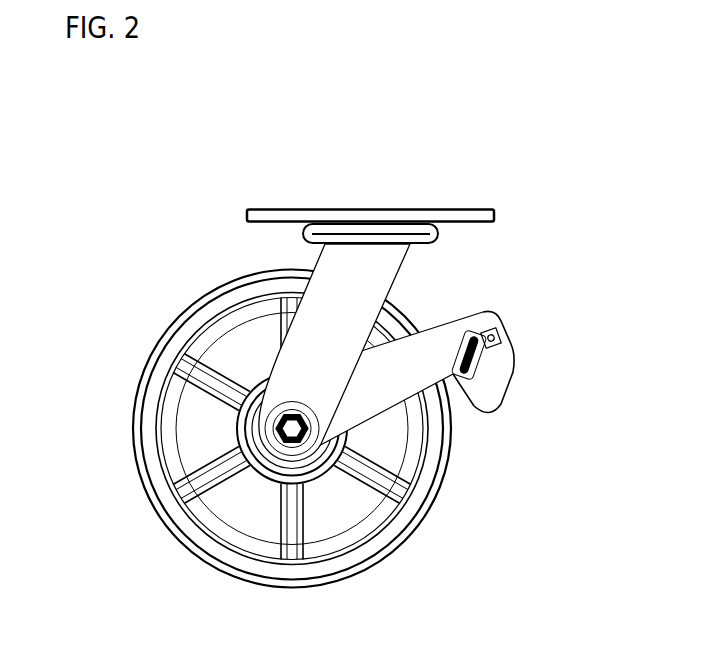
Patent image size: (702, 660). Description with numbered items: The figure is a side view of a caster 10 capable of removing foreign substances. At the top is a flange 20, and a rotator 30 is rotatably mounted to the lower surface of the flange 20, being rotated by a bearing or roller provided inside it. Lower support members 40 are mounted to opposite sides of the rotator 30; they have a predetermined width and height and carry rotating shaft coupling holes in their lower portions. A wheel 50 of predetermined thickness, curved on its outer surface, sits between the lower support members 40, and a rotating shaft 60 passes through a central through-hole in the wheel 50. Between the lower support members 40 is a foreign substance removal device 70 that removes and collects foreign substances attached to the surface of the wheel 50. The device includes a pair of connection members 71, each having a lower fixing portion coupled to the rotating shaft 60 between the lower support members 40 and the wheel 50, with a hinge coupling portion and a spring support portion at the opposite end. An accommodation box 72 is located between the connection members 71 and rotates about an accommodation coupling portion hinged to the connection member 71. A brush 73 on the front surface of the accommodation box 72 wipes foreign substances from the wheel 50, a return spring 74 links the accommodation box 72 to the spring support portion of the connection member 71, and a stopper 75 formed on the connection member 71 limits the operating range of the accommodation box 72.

The caster 10 is at (309, 132).
The flange 20 is at (470, 211).
The rotator 30 is at (438, 233).
The lower support member 40 is at (320, 256).
The wheel 50 is at (160, 342).
The rotating shaft 60 is at (274, 428).
The foreign substance removal device 70 is at (497, 312).
The connection member 71 is at (382, 398).
The accommodation box 72 is at (495, 388).
The brush 73 is at (452, 390).
The return spring 74 is at (508, 349).
The stopper 75 is at (462, 358).